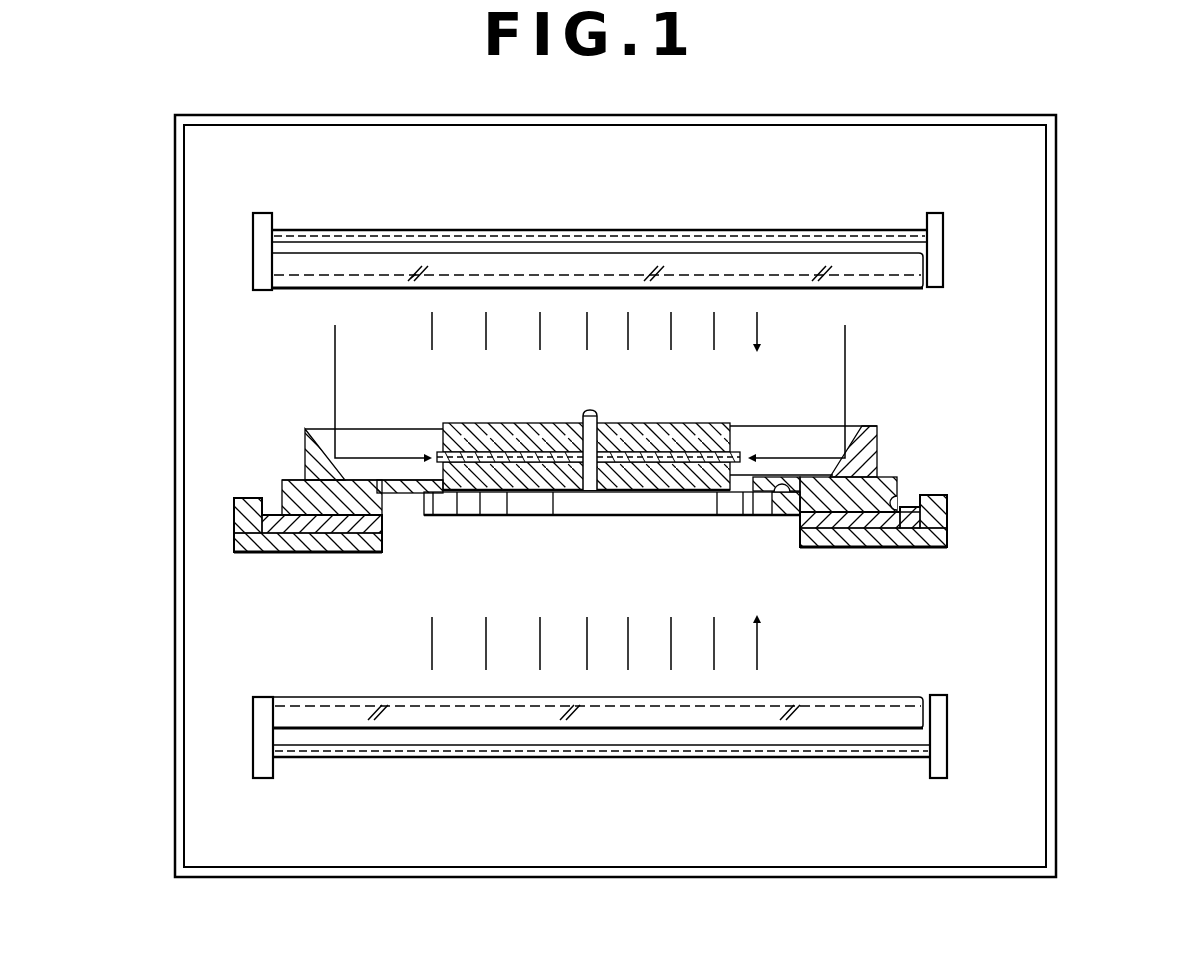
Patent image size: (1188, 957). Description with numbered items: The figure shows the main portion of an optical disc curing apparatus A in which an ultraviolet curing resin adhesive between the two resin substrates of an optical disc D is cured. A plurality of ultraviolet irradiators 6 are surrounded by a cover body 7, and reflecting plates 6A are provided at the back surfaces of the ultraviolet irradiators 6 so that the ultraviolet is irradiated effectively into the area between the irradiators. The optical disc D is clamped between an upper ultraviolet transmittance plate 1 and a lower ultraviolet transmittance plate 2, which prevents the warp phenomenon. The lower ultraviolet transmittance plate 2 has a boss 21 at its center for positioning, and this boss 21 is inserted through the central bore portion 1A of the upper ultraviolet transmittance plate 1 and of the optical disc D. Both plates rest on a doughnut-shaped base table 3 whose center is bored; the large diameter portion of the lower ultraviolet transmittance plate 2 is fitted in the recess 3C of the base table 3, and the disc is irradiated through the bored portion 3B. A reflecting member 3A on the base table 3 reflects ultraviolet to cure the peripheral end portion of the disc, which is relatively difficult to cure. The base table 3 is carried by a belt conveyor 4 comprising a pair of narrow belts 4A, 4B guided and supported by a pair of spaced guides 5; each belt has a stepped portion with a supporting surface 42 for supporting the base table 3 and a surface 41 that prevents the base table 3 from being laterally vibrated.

The upper ultraviolet transmittance plate 1 is at (622, 471).
The central bore portion 1A is at (575, 425).
The lower ultraviolet transmittance plate 2 is at (672, 485).
The boss 21 is at (583, 495).
The base table 3 is at (634, 488).
The reflecting member 3A is at (880, 445).
The bored portion 3B is at (443, 518).
The recess 3C is at (778, 500).
The belt conveyor 4 is at (626, 528).
The belt 4A is at (908, 525).
The belt 4B is at (310, 553).
The surface for preventing lateral vibration 41 is at (900, 490).
The supporting surface 42 is at (895, 548).
The guide 5 is at (950, 518).
The ultraviolet irradiator 6 is at (875, 280).
The reflecting plate 6A is at (645, 232).
The cover body 7 is at (1057, 363).
The optical disc curing apparatus A is at (1087, 188).
The optical disc D is at (745, 452).